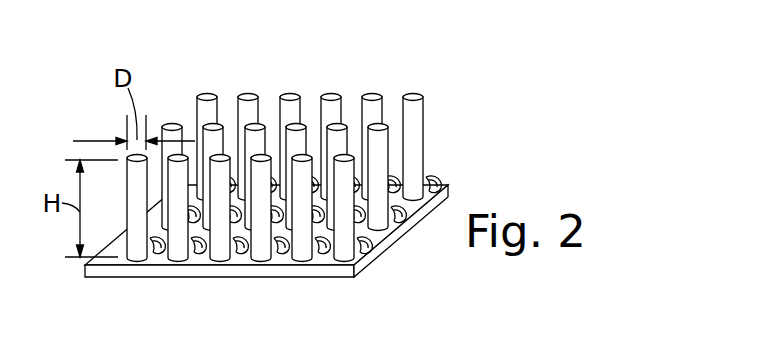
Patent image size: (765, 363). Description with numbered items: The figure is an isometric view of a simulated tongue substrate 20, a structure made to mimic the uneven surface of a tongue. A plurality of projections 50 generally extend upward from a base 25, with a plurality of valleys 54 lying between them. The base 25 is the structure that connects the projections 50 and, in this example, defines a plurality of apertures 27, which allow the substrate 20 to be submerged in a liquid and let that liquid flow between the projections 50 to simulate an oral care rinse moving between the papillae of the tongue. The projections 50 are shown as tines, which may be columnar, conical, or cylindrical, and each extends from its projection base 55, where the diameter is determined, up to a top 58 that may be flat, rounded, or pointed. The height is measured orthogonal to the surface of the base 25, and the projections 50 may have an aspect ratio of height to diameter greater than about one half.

The simulated tongue substrate 20 is at (478, 78).
The base 25 is at (383, 241).
The apertures 27 is at (158, 250).
The projections 50 is at (330, 98).
The valleys 54 is at (270, 112).
The projection base 55 is at (419, 195).
The top 58 is at (423, 115).